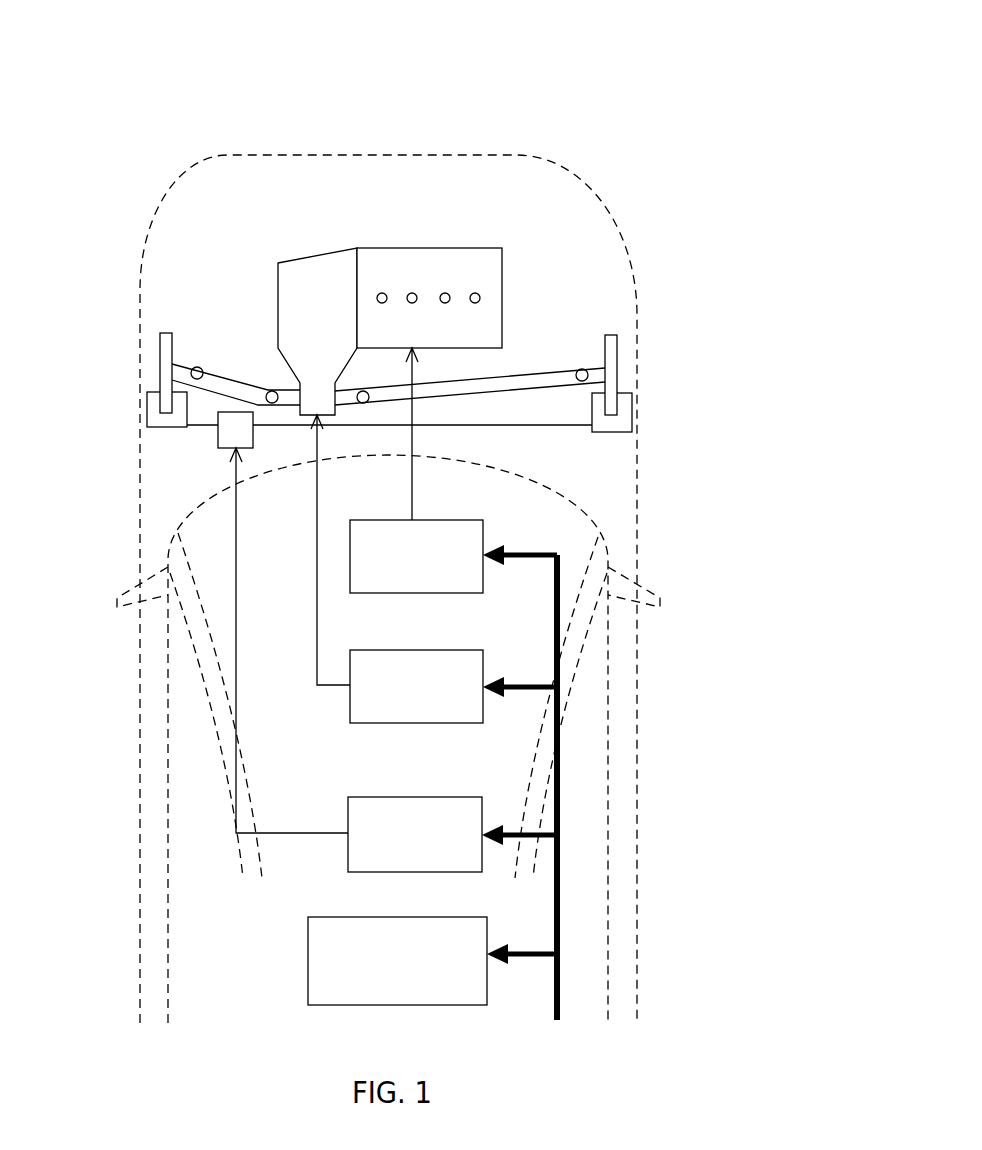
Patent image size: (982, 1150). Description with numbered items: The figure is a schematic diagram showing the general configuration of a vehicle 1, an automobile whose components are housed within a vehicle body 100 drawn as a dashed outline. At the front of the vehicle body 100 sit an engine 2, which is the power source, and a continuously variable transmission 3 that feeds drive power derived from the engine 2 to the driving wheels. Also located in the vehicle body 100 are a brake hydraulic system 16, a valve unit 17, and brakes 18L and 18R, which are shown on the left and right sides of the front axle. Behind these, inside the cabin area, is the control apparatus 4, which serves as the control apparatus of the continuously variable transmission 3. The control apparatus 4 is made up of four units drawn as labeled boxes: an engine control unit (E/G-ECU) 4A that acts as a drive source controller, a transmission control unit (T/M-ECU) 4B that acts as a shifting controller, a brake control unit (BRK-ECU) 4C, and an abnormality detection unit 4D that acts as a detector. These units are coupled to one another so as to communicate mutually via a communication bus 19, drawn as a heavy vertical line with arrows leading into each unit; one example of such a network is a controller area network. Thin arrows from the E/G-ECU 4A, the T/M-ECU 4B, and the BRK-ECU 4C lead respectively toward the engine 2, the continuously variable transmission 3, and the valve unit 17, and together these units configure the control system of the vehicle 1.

The vehicle 1 is at (617, 107).
The vehicle body 100 is at (202, 168).
The engine 2 is at (417, 267).
The continuously variable transmission 3 is at (318, 277).
The control apparatus 4 is at (295, 875).
The engine control unit (E/G-ECU) 4A is at (450, 520).
The transmission control unit (T/M-ECU) 4B is at (445, 650).
The brake control unit (BRK-ECU) 4C is at (440, 797).
The abnormality detection unit 4D is at (441, 917).
The brake hydraulic system 16 is at (203, 432).
The valve unit 17 is at (240, 423).
The brake 18L is at (152, 358).
The brake 18R is at (625, 370).
The communication bus 19 is at (560, 945).